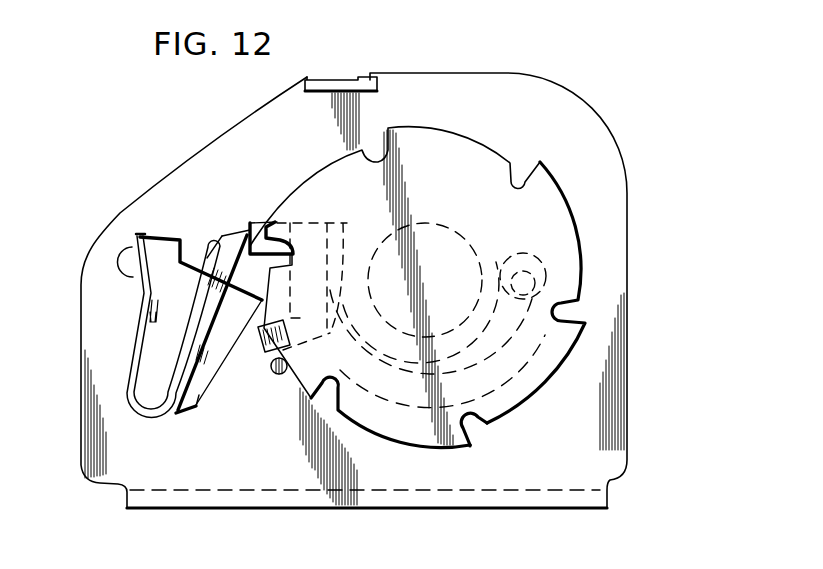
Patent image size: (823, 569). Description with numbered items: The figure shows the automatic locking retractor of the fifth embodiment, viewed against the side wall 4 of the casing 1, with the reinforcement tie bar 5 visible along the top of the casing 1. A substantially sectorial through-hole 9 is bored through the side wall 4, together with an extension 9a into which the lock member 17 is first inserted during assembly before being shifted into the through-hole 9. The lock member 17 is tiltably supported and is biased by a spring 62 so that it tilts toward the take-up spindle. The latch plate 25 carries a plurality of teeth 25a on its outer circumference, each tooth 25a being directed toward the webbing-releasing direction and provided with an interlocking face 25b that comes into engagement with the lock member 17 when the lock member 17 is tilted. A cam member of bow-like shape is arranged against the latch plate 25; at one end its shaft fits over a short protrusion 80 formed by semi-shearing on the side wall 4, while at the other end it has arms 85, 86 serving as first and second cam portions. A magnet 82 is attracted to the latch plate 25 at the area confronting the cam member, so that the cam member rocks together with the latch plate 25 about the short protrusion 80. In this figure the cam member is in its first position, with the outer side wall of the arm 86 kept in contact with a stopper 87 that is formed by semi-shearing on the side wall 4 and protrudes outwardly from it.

The casing 1 is at (70, 314).
The side wall 4 is at (487, 75).
The reinforcement tie bar 5 is at (336, 80).
The sectorial through-hole 9 is at (218, 385).
The extension of the through-hole 9a is at (162, 256).
The lock member 17 is at (178, 413).
The latch plate 25 is at (455, 150).
The tooth 25a is at (440, 443).
The interlocking face 25b is at (476, 428).
The spring 62 is at (128, 397).
The short protrusion 80 is at (527, 278).
The magnet 82 is at (303, 227).
The arm 85 is at (241, 234).
The arm 86 is at (262, 340).
The stopper 87 is at (278, 374).